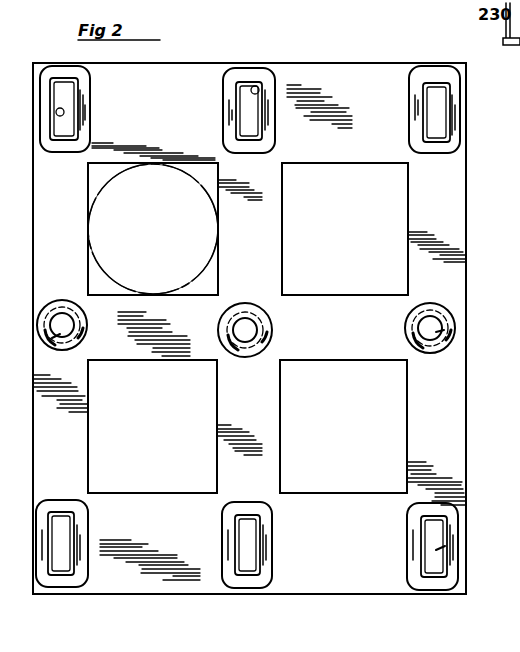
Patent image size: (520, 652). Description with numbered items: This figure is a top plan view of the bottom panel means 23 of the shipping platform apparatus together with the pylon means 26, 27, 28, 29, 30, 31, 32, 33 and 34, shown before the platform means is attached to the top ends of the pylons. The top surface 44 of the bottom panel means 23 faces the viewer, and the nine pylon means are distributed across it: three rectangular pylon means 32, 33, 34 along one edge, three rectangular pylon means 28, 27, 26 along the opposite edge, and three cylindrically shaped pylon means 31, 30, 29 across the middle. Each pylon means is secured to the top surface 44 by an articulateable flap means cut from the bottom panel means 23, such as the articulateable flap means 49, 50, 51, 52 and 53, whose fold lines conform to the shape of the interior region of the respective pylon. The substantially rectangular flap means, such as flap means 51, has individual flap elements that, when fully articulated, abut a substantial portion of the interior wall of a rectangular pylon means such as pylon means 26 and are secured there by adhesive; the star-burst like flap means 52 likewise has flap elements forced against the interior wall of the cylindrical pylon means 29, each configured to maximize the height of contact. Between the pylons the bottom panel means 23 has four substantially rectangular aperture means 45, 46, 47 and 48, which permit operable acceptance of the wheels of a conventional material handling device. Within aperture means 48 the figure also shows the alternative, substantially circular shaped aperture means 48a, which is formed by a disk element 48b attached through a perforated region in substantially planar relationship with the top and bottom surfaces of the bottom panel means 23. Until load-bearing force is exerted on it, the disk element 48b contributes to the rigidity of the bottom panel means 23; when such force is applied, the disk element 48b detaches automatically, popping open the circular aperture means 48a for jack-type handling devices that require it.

The bottom panel means 23 is at (476, 177).
The top surface 44 is at (191, 74).
The pylon means 26 is at (460, 580).
The pylon means 27 is at (272, 572).
The pylon means 28 is at (86, 572).
The pylon means 29 is at (448, 306).
The pylon means 30 is at (262, 312).
The pylon means 31 is at (74, 302).
The pylon means 32 is at (52, 66).
The pylon means 33 is at (242, 68).
The pylon means 34 is at (422, 66).
The aperture means 45 is at (350, 178).
The aperture means 46 is at (328, 492).
The aperture means 47 is at (152, 492).
The aperture means 48 is at (95, 186).
The circular shaped aperture means 48a is at (195, 180).
The disk element 48b is at (197, 234).
The articulateable flap means 49 is at (56, 112).
The articulateable flap means 50 is at (257, 88).
The articulateable flap means 51 is at (440, 550).
The articulateable flap means 52 is at (440, 334).
The articulateable flap means 53 is at (55, 340).